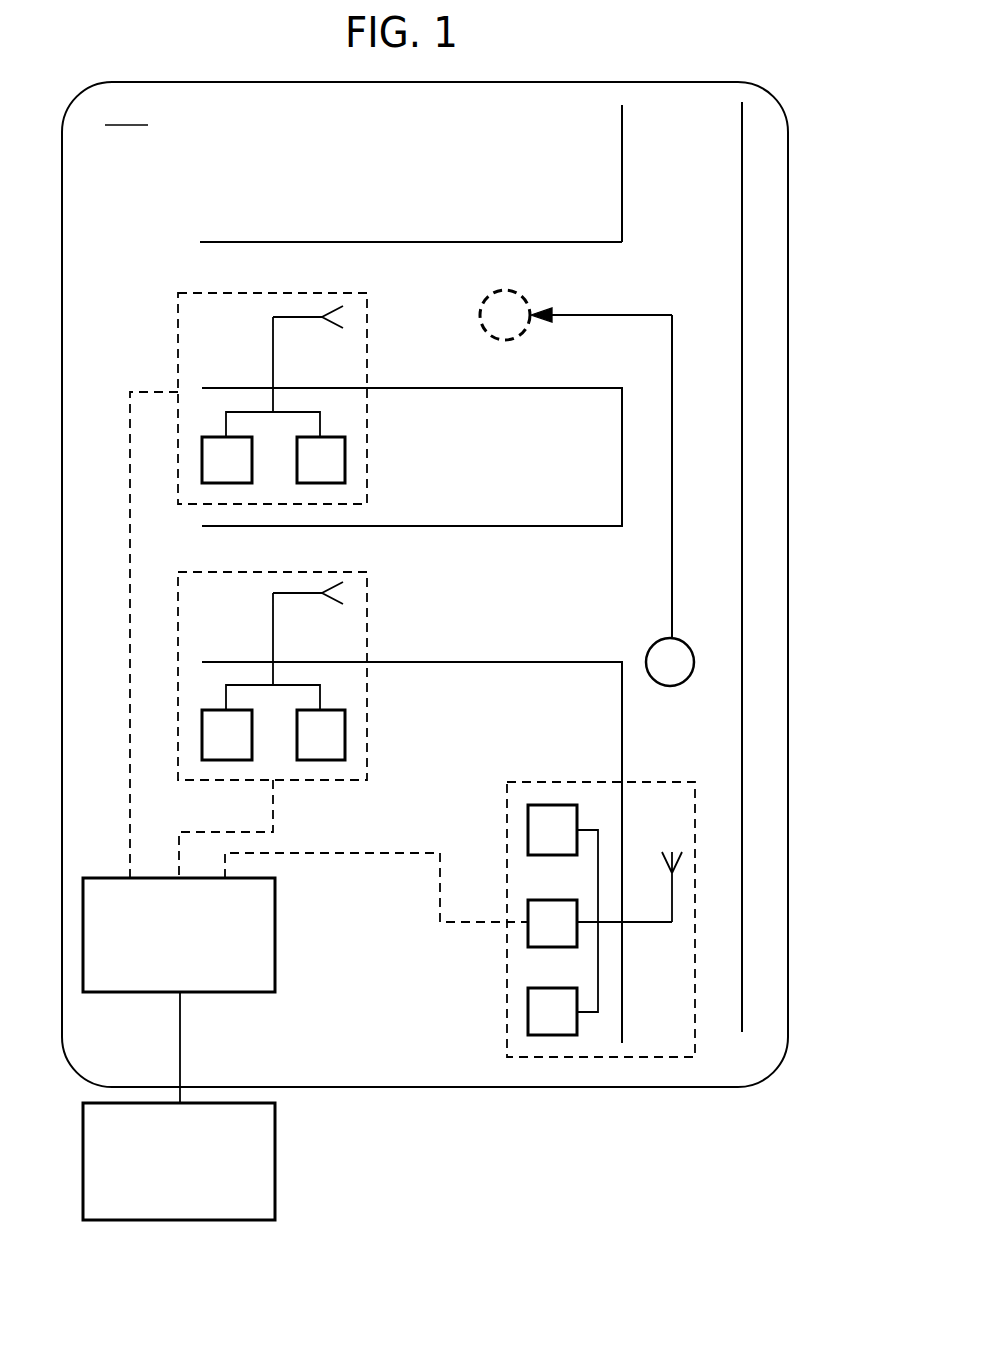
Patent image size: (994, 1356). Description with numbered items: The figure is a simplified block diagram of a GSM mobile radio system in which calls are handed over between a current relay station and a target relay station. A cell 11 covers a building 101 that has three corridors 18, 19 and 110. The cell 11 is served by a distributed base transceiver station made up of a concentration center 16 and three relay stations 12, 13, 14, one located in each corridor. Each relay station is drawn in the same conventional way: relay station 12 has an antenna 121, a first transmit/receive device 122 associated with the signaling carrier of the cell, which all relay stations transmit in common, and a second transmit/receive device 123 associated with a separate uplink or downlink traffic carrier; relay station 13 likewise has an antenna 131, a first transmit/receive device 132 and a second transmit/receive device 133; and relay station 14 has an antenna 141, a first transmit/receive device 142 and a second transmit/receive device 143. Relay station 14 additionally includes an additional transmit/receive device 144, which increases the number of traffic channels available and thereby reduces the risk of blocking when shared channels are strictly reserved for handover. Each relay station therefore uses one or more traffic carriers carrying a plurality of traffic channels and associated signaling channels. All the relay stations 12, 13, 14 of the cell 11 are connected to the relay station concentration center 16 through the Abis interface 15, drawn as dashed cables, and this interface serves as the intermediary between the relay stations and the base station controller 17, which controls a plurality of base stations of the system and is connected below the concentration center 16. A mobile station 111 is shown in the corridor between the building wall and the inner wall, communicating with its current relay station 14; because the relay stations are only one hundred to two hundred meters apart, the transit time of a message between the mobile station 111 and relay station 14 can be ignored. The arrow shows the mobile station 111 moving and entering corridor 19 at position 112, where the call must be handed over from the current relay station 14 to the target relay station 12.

The cell 11 is at (788, 267).
The relay station 12 is at (269, 348).
The antenna 121 is at (290, 317).
The first transmit/receive device 122 is at (343, 462).
The second transmit/receive device 123 is at (208, 462).
The relay station 13 is at (301, 661).
The antenna 131 is at (293, 593).
The first transmit/receive device 132 is at (345, 735).
The second transmit/receive device 133 is at (200, 735).
The relay station 14 is at (583, 919).
The antenna 141 is at (672, 897).
The first transmit/receive device 142 is at (557, 805).
The second transmit/receive device 143 is at (528, 935).
The additional transmit/receive device 144 is at (528, 1015).
The Abis interface 15 is at (130, 753).
The concentration center 16 is at (225, 980).
The base station controller 17 is at (255, 1162).
The corridor 18 is at (718, 698).
The corridor 19 is at (428, 265).
The building 101 is at (742, 507).
The corridor 110 is at (500, 537).
The mobile station 111 is at (658, 638).
The position 112 is at (512, 290).